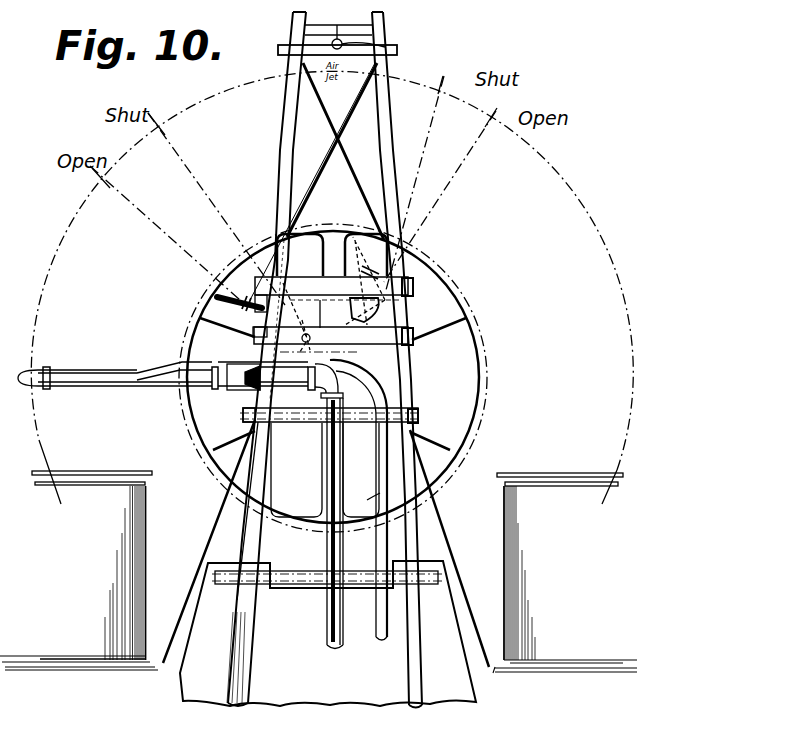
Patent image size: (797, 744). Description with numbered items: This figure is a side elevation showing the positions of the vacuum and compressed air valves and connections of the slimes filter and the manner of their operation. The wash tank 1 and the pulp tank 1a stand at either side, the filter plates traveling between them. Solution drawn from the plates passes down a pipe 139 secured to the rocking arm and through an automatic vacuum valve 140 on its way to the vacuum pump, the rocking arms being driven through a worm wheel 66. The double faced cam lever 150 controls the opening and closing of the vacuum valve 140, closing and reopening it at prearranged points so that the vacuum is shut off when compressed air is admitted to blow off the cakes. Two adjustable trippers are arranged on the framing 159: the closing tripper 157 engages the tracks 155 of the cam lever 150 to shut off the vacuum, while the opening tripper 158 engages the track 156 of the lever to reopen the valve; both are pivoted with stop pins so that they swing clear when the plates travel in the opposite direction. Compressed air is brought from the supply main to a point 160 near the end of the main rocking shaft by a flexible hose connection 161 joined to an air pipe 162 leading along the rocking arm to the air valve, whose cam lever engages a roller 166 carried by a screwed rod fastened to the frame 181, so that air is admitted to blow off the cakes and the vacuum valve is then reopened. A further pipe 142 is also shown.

The frame 181 is at (323, 34).
The roller 166 is at (386, 47).
The worm wheel 66 is at (214, 300).
The automatic vacuum valve 140 is at (232, 292).
The double faced cam lever 150 is at (236, 276).
The track 156 is at (290, 284).
The framing 159 is at (370, 282).
The opening tripper 158 is at (303, 327).
The tracks 155 is at (400, 275).
The closing tripper 157 is at (462, 283).
The point 160 is at (397, 363).
The air pipe 162 is at (155, 369).
The pipe 139 is at (33, 370).
The vertical pipe 142 is at (336, 428).
The flexible hose connection 161 is at (380, 493).
The pulp tank 1a is at (79, 570).
The wash tank 1 is at (565, 573).